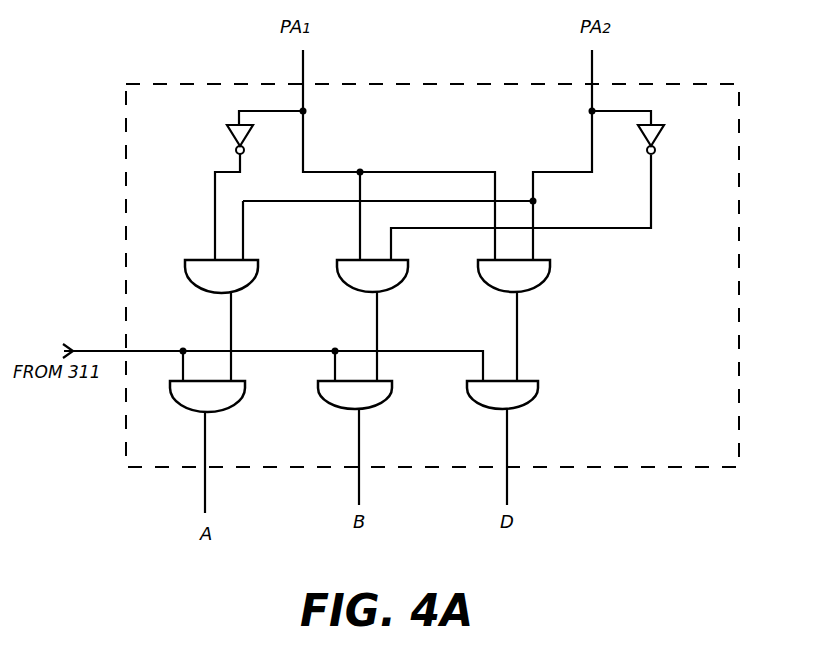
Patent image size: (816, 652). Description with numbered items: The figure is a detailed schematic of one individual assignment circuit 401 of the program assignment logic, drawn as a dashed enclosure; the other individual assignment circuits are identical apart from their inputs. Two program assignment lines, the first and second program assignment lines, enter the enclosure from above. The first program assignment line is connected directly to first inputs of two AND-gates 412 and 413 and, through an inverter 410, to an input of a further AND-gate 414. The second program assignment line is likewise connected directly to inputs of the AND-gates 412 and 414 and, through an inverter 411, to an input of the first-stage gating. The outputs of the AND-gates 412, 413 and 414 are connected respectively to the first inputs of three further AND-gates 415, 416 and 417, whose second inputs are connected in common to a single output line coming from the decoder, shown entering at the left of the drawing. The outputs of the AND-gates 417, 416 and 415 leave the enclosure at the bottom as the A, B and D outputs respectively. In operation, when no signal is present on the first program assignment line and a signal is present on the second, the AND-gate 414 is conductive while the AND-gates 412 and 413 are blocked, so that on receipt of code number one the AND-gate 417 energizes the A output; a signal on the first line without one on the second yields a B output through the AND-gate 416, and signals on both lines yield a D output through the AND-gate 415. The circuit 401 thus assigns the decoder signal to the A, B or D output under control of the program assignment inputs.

The individual assignment circuit 401 is at (739, 279).
The inverter 410 is at (233, 132).
The inverter 411 is at (662, 136).
The AND-gate 412 is at (512, 284).
The AND-gate 413 is at (368, 283).
The AND-gate 414 is at (218, 284).
The AND-gate 415 is at (508, 402).
The AND-gate 416 is at (357, 402).
The AND-gate 417 is at (206, 403).